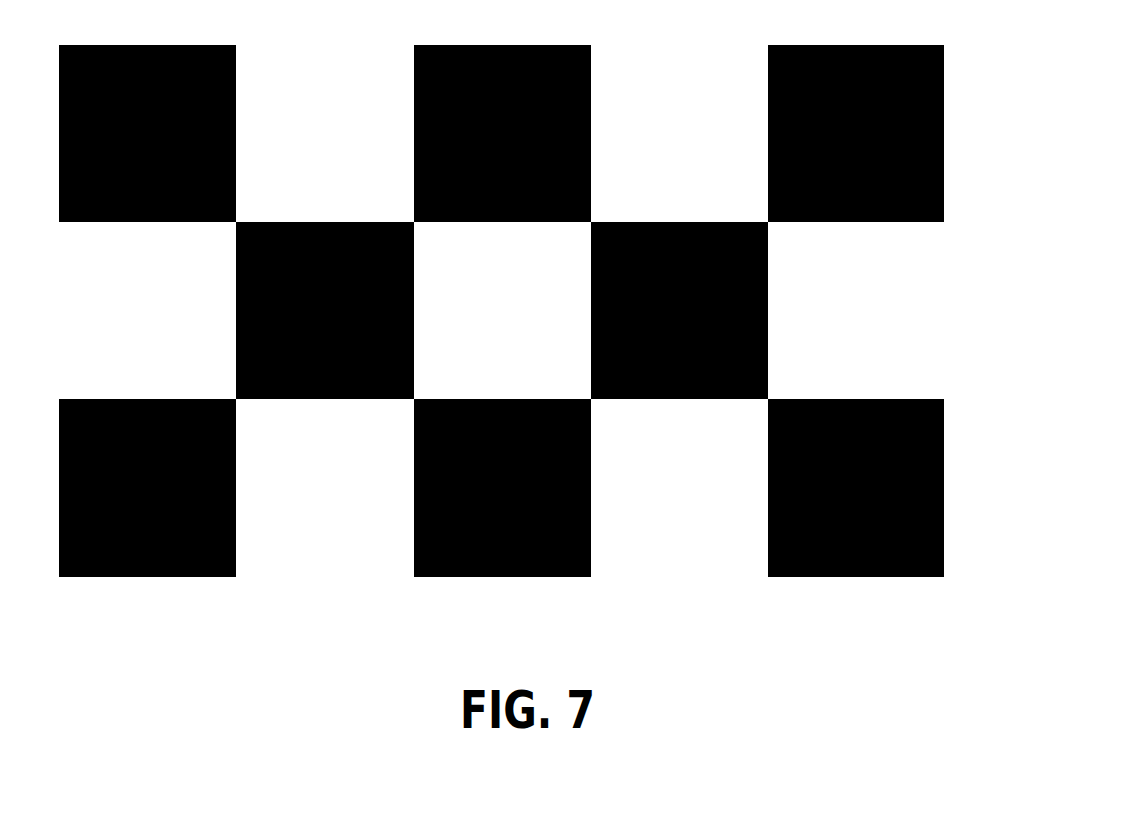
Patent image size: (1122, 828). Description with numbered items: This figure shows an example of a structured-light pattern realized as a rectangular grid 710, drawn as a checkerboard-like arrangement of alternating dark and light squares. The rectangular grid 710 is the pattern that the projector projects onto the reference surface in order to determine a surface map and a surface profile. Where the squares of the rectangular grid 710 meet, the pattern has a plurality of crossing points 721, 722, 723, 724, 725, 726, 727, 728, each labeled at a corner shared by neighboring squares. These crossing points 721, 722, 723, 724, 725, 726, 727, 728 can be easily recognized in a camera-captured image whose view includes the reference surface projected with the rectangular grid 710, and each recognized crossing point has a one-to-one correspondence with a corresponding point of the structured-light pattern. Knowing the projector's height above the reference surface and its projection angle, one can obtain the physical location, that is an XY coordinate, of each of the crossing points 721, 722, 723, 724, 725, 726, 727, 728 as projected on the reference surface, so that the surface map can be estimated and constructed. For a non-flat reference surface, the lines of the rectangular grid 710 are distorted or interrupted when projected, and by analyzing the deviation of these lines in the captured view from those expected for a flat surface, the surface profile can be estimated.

The rectangular grid 710 is at (898, 313).
The crossing point 721 is at (222, 220).
The crossing point 722 is at (398, 203).
The crossing point 723 is at (576, 221).
The crossing point 724 is at (753, 204).
The crossing point 725 is at (769, 384).
The crossing point 726 is at (591, 397).
The crossing point 727 is at (399, 399).
The crossing point 728 is at (223, 386).